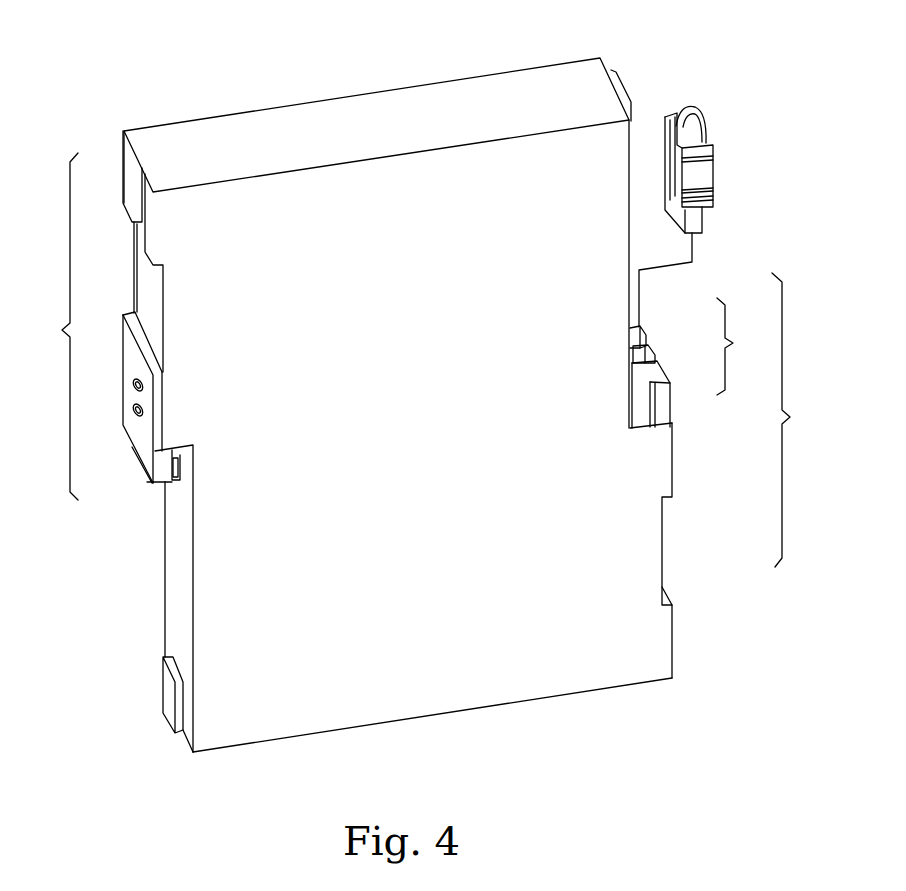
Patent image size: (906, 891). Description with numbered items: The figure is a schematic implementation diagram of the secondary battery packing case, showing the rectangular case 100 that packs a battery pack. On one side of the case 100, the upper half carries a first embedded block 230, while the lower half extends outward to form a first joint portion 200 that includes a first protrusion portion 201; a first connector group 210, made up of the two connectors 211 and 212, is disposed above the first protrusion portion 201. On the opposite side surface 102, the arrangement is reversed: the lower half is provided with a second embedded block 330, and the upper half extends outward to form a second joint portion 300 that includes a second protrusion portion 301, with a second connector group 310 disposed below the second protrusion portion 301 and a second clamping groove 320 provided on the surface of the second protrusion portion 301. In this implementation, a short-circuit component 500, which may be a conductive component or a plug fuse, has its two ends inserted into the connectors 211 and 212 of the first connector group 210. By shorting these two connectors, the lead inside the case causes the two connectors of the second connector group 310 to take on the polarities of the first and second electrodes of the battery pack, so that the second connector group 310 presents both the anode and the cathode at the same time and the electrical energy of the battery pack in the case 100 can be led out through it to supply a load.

The case 100 is at (343, 78).
The side surface 102 is at (180, 573).
The first joint portion 200 is at (802, 420).
The first protrusion portion 201 is at (642, 540).
The first connector group 210 is at (705, 363).
The connector 211 is at (645, 333).
The connector 212 is at (653, 358).
The first embedded block 230 is at (628, 84).
The second joint portion 300 is at (49, 326).
The second protrusion portion 301 is at (175, 285).
The second connector group 310 is at (143, 470).
The second clamping groove 320 is at (143, 195).
The second embedded block 330 is at (170, 688).
The short-circuit component 500 is at (702, 172).